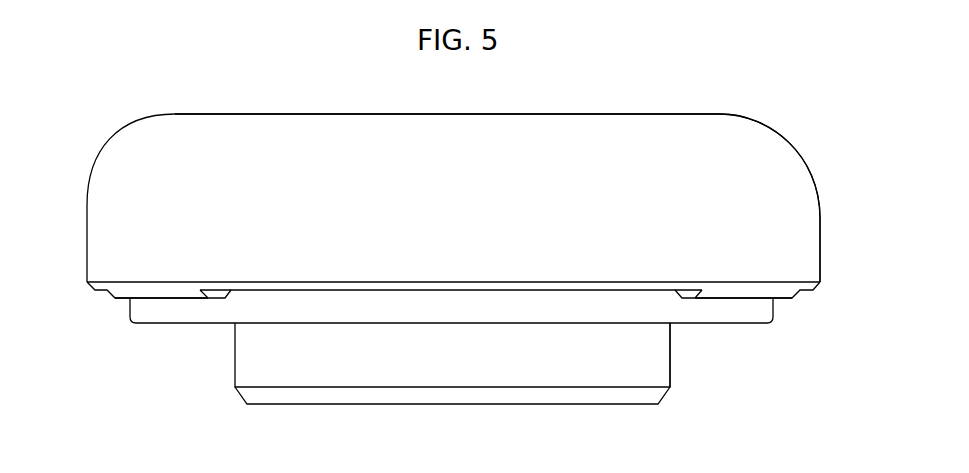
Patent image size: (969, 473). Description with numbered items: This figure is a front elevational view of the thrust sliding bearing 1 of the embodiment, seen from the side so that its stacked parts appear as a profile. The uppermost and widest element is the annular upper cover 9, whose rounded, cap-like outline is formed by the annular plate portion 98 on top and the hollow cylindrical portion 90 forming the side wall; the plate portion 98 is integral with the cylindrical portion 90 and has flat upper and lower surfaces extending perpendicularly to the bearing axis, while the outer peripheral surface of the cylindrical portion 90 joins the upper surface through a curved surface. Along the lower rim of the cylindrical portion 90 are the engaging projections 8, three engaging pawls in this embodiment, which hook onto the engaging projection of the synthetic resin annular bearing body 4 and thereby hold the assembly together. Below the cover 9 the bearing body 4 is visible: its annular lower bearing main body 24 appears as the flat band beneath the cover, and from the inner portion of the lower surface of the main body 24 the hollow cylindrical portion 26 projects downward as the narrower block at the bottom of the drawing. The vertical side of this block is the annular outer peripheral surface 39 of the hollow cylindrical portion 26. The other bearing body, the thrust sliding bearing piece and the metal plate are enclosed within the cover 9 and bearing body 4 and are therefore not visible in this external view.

The thrust sliding bearing 1 is at (111, 133).
The annular plate portion 98 is at (258, 128).
The annular upper cover 9 is at (773, 128).
The hollow cylindrical portion 90 is at (805, 258).
The engaging projections 8 is at (157, 288).
The annular bearing body 4 is at (200, 324).
The annular lower bearing main body 24 is at (585, 314).
The hollow cylindrical portion 26 is at (347, 374).
The annular outer peripheral surface 39 is at (670, 373).